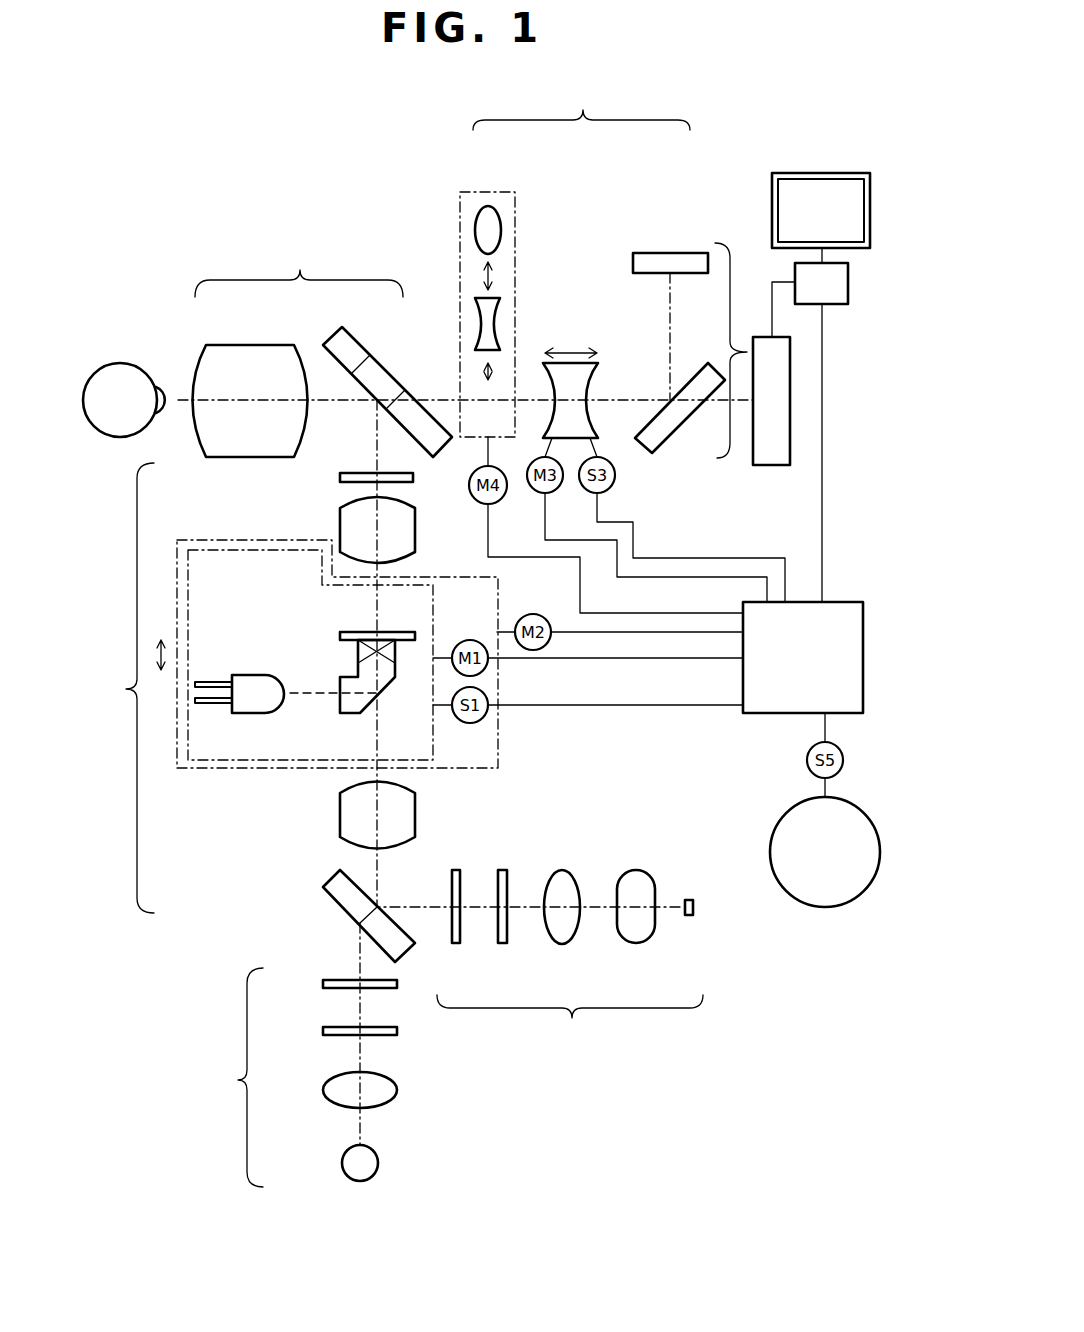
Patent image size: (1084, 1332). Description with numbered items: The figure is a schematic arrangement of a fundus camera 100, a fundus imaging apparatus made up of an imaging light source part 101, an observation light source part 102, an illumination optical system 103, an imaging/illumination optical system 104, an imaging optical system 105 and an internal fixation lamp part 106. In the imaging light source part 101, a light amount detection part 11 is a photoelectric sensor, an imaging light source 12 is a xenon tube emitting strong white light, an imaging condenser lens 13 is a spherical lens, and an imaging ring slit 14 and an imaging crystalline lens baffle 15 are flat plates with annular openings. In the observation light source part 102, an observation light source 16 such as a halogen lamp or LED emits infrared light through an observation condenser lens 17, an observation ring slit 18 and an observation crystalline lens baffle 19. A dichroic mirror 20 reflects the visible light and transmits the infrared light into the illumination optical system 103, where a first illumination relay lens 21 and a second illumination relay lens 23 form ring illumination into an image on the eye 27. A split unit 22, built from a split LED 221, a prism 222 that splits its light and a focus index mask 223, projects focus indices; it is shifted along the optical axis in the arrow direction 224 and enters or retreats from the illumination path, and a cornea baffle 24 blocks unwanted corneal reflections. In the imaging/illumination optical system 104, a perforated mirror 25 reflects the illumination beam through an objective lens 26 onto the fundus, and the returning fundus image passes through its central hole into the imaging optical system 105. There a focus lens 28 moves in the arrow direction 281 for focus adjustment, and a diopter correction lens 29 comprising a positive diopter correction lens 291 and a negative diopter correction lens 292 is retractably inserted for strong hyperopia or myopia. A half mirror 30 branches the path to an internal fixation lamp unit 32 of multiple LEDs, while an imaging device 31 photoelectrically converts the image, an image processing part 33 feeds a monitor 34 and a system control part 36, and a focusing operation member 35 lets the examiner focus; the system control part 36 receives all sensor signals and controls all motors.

The fundus camera 100 is at (731, 1098).
The imaging light source part 101 is at (570, 1025).
The observation light source part 102 is at (224, 1077).
The illumination optical system 103 is at (115, 688).
The imaging/illumination optical system 104 is at (299, 268).
The imaging optical system 105 is at (581, 103).
The internal fixation lamp part 106 is at (740, 332).
The light amount detection part 11 is at (688, 900).
The imaging light source 12 is at (635, 943).
The imaging condenser lens 13 is at (562, 943).
The imaging ring slit 14 is at (502, 943).
The imaging crystalline lens baffle 15 is at (457, 943).
The observation light source 16 is at (342, 1163).
The observation condenser lens 17 is at (322, 1088).
The observation ring slit 18 is at (323, 1031).
The observation crystalline lens baffle 19 is at (323, 984).
The dichroic mirror 20 is at (332, 902).
The first illumination relay lens 21 is at (340, 816).
The split unit 22 is at (498, 750).
The split LED 221 is at (255, 675).
The prism 222 is at (348, 713).
The focus index mask 223 is at (340, 632).
The arrow direction 224 is at (158, 654).
The second illumination relay lens 23 is at (340, 525).
The cornea baffle 24 is at (340, 478).
The perforated mirror 25 is at (386, 350).
The objective lens 26 is at (250, 345).
The eye 27 is at (127, 362).
The focus lens 28 is at (598, 379).
The arrow direction 281 is at (570, 353).
The diopter correction lens 29 is at (490, 190).
The positive diopter correction lens 291 is at (501, 217).
The negative diopter correction lens 292 is at (500, 297).
The half mirror 30 is at (653, 453).
The imaging device 31 is at (773, 466).
The internal fixation lamp unit 32 is at (675, 253).
The image processing part 33 is at (837, 305).
The monitor 34 is at (818, 173).
The focusing operation member 35 is at (825, 907).
The system control part 36 is at (845, 602).